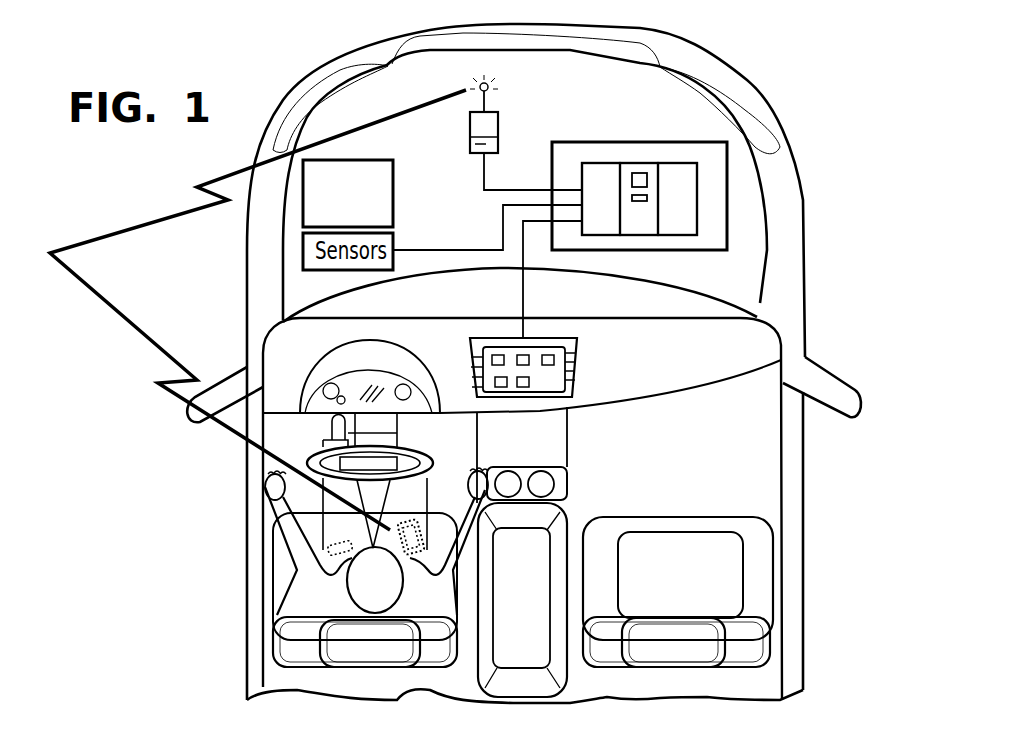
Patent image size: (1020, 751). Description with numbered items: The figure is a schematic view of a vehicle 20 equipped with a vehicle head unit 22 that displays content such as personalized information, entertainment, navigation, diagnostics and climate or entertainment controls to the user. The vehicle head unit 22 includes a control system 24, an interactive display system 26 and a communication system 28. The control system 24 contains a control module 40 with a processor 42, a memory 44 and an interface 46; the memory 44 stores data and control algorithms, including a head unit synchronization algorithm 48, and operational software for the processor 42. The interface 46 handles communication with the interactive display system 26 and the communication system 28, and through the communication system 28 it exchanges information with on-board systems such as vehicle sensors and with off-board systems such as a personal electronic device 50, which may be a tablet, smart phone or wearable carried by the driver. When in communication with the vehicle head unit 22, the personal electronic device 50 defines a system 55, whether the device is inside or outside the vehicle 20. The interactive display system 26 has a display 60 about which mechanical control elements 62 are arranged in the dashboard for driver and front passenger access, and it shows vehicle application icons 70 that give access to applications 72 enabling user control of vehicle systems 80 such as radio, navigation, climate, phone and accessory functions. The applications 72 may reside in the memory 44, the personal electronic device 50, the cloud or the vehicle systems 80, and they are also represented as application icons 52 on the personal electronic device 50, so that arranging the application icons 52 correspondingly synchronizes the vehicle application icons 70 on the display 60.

The vehicle 20 is at (797, 57).
The vehicle head unit 22 is at (576, 128).
The control system 24 is at (686, 163).
The interactive display system 26 is at (558, 397).
The communication system 28 is at (502, 145).
The control module 40 is at (730, 200).
The processor 42 is at (692, 213).
The memory 44 is at (653, 229).
The interface 46 is at (613, 213).
The head unit synchronization algorithm 48 is at (640, 172).
The personal electronic device 50 is at (427, 536).
The application icons 52 is at (427, 560).
The system 55 is at (108, 320).
The display 60 is at (542, 385).
The mechanical control elements 62 is at (568, 373).
The vehicle application icons 70 is at (499, 387).
The applications 72 is at (647, 195).
The vehicle systems 80 is at (394, 173).